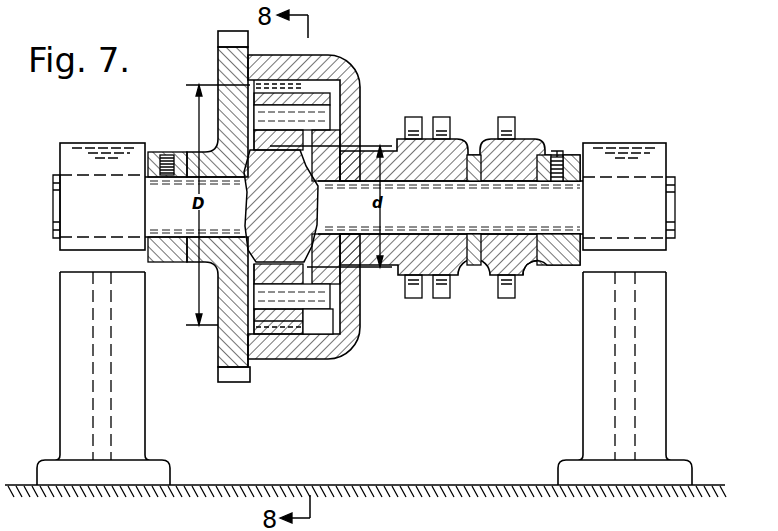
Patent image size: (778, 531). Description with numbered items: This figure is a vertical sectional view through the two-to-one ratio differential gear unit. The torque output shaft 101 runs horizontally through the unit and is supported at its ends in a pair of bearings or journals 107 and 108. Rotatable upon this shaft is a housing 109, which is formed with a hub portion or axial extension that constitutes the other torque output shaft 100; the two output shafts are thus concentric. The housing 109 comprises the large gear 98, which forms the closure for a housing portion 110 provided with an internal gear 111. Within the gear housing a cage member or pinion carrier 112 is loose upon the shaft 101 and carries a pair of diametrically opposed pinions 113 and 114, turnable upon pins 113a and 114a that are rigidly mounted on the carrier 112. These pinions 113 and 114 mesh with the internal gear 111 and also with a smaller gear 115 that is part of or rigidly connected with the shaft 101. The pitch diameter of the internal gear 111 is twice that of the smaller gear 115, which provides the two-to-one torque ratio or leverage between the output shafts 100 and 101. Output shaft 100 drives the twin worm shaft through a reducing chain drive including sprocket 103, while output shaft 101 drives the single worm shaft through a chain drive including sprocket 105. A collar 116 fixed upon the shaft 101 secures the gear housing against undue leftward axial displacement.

The large gear 98 is at (235, 382).
The torque output shaft 100 is at (457, 265).
The torque output shaft 101 is at (674, 197).
The reducing sprocket 103 is at (441, 116).
The reducing sprocket 105 is at (532, 267).
The bearing 107 is at (102, 142).
The bearing 108 is at (620, 143).
The housing 109 is at (256, 369).
The housing portion 110 is at (218, 63).
The internal gear 111 is at (273, 335).
The pinion carrier 112 is at (327, 321).
The pinion 113 is at (297, 328).
The pin 113a is at (323, 297).
The pinion 114 is at (305, 92).
The pin 114a is at (327, 118).
The smaller gear 115 is at (281, 206).
The collar 116 is at (168, 262).